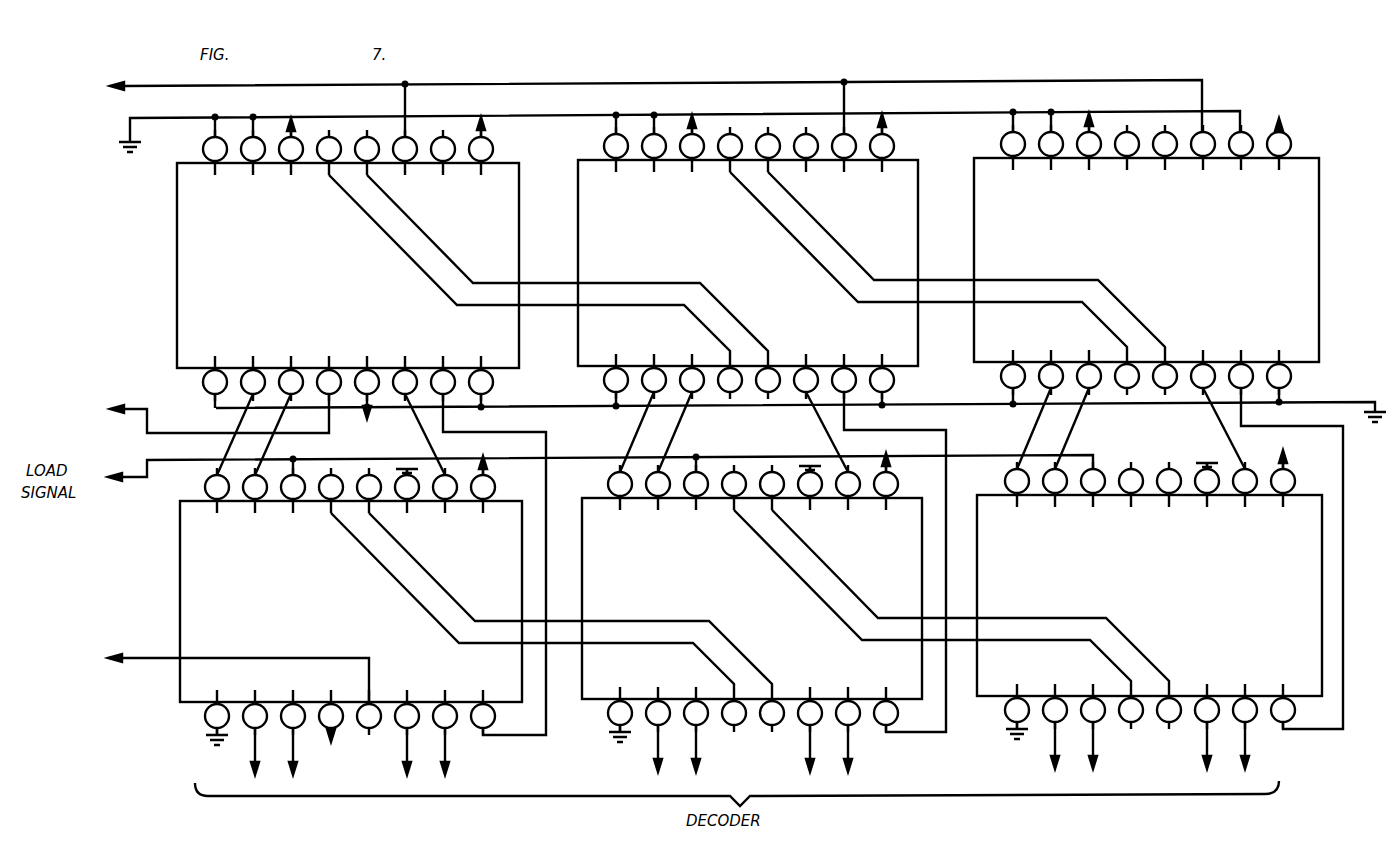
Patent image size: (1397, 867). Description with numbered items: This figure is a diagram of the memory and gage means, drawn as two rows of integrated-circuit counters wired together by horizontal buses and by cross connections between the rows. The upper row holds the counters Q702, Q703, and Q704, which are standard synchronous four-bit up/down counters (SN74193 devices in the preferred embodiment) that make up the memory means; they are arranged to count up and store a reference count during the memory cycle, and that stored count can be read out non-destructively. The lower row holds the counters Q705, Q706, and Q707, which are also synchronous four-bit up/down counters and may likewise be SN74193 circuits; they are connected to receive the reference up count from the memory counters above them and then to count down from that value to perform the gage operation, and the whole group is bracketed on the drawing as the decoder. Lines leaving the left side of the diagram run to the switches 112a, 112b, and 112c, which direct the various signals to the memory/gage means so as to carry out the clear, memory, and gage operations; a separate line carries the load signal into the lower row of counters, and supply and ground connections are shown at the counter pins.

The synchronous four bit up/down counter Q702 is at (361, 276).
The synchronous four bit up/down counter Q703 is at (761, 259).
The synchronous four bit up/down counter Q704 is at (1186, 261).
The synchronous four-bit up/down counter Q705 is at (346, 611).
The synchronous four-bit up/down counter Q706 is at (768, 602).
The synchronous four-bit up/down counter Q707 is at (1191, 608).
The switch 112a is at (627, 111).
The switch 112b is at (703, 415).
The switch 112c is at (53, 666).